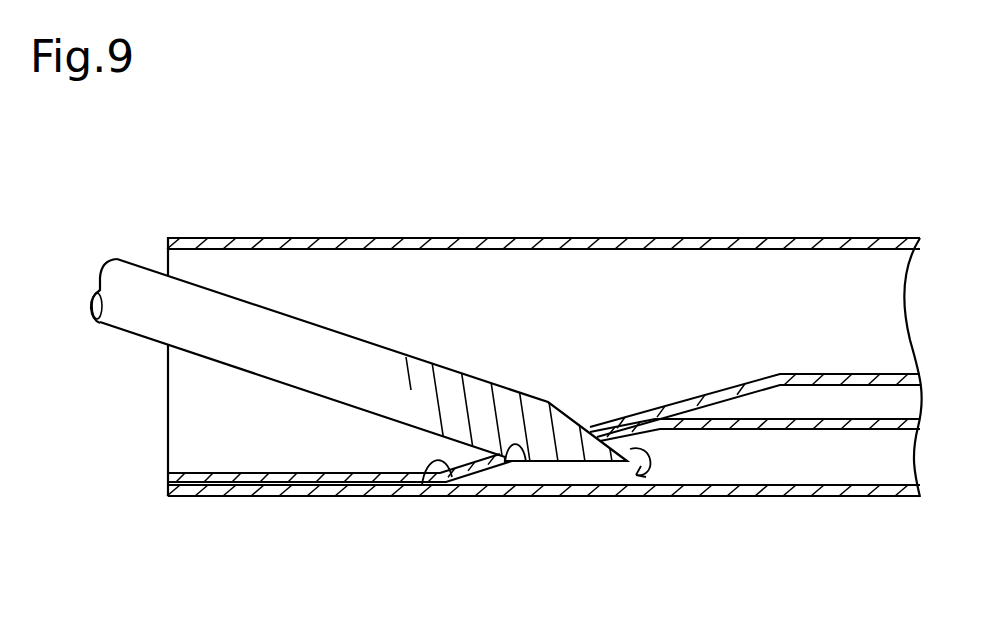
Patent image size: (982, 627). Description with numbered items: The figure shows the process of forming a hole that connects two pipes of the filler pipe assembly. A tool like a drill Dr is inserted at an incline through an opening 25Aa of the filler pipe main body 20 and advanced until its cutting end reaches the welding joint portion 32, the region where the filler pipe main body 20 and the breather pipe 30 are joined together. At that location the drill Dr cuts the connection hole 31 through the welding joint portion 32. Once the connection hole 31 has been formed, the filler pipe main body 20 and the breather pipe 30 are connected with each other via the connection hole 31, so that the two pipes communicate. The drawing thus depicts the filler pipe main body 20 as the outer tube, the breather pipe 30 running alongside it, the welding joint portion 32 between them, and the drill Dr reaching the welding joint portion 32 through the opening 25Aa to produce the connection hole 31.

The filler pipe main body 20 is at (675, 238).
The breather pipe 30 is at (747, 497).
The opening 25Aa is at (177, 258).
The drill Dr is at (130, 323).
The connection hole 31 is at (503, 457).
The welding joint portion 32 is at (426, 474).